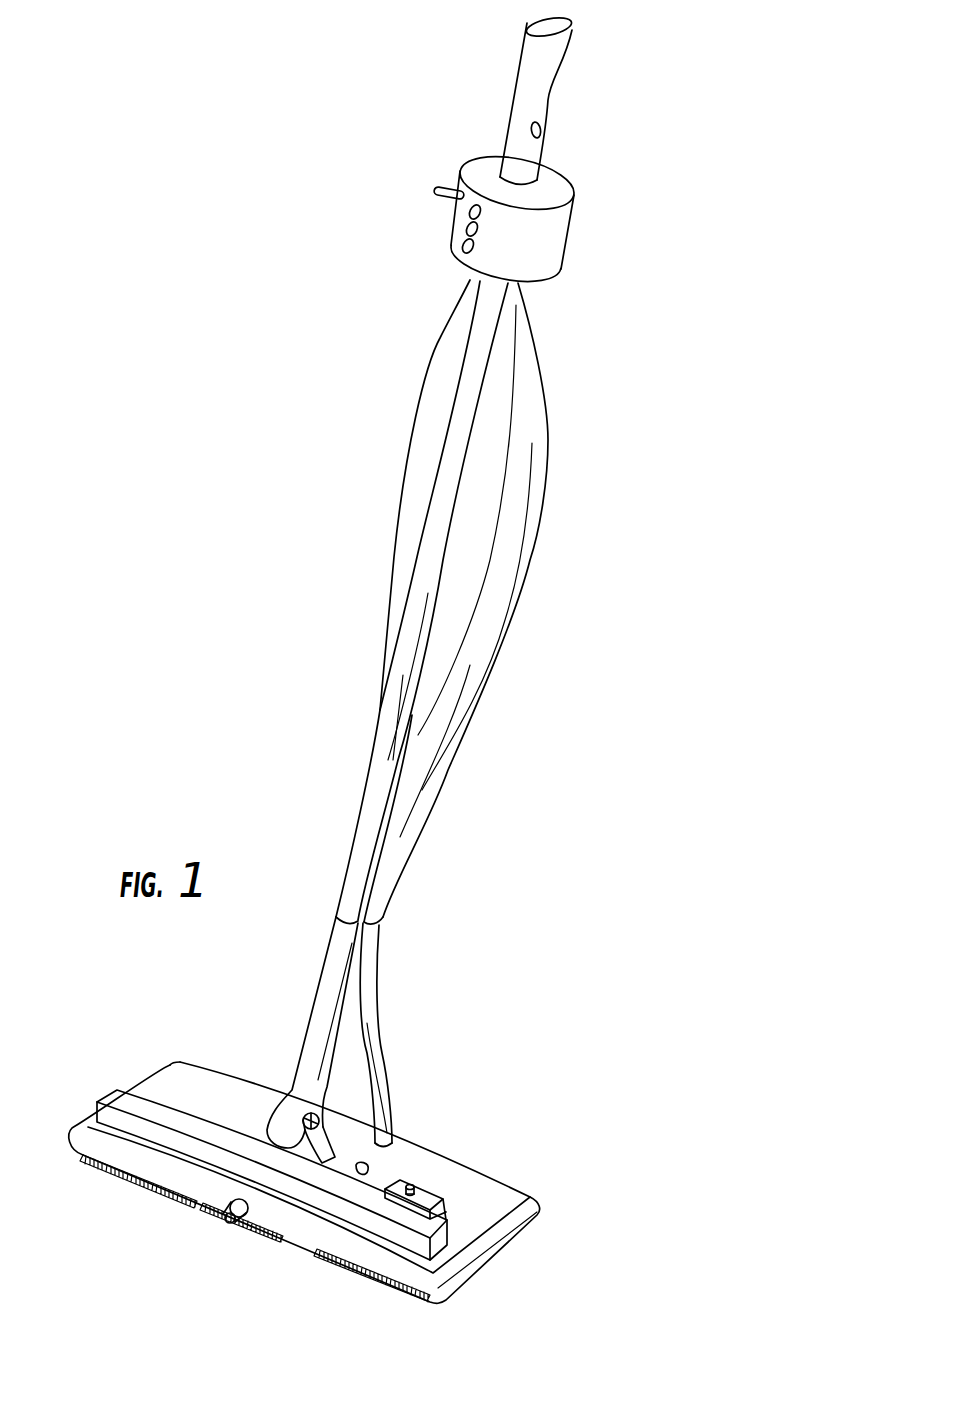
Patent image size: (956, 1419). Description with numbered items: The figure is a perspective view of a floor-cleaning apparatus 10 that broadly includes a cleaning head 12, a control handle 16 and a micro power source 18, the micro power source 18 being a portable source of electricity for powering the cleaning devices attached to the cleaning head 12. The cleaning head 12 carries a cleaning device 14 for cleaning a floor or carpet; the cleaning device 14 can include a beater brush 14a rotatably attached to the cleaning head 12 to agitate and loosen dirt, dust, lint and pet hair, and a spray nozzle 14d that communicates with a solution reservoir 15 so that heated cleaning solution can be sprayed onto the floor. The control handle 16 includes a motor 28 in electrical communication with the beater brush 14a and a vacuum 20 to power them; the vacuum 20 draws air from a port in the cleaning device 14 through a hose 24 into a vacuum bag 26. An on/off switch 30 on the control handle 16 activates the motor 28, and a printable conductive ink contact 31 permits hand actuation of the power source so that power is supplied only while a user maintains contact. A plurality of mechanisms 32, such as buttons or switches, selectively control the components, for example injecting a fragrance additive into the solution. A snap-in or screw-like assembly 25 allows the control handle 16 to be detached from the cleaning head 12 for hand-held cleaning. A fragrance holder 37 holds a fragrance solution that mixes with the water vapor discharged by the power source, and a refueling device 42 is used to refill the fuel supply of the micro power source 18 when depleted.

The floor-cleaning apparatus 10 is at (627, 264).
The cleaning head 12 is at (541, 1125).
The cleaning device 14 is at (498, 1250).
The beater brush 14a is at (342, 1270).
The spray nozzle 14d is at (210, 1213).
The solution reservoir 15 is at (117, 1098).
The control handle 16 is at (360, 812).
The micro power source 18 is at (372, 1168).
The vacuum 20 is at (452, 1036).
The hose 24 is at (374, 1048).
The snap-in or screw-like assembly 25 is at (365, 925).
The vacuum bag 26 is at (447, 770).
The motor 28 is at (540, 258).
The on/off switch 30 is at (462, 194).
The printable conductive ink contact 31 is at (540, 133).
The mechanisms 32 is at (465, 233).
The fragrance holder 37 is at (414, 1188).
The refueling device 42 is at (400, 1184).